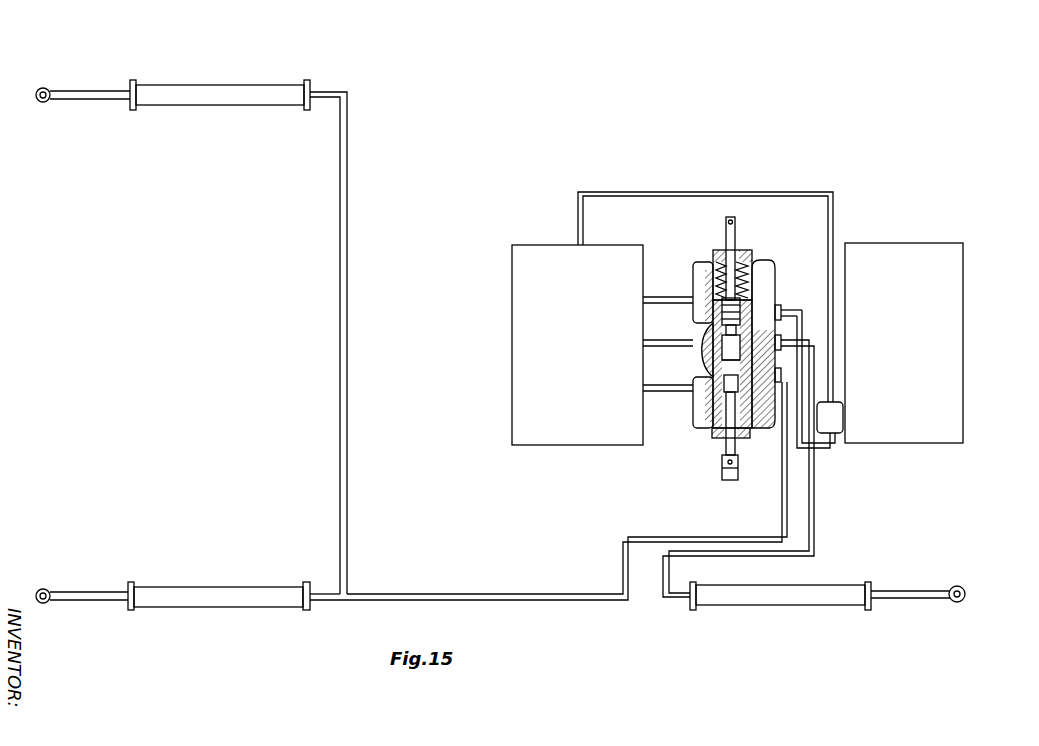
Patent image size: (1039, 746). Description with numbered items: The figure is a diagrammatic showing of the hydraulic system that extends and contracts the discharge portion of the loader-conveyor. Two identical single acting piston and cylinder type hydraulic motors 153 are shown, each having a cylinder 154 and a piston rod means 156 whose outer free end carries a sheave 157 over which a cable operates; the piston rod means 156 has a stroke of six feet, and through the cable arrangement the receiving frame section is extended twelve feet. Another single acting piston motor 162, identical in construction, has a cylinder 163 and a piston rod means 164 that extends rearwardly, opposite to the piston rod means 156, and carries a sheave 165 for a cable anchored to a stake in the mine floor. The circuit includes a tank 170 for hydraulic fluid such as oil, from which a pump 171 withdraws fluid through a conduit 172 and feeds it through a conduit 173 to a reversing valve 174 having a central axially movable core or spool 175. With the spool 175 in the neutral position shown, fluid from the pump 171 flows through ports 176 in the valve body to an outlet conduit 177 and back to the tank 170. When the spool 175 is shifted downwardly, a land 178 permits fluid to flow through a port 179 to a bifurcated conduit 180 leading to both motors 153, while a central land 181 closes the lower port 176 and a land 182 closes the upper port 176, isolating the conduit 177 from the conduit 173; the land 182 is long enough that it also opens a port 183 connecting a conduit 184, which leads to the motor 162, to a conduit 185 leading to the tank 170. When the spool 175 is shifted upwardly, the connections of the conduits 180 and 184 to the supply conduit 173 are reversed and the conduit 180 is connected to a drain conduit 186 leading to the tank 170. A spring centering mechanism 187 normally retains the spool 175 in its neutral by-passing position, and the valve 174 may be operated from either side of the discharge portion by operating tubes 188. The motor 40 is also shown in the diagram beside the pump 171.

The motor 40 is at (904, 343).
The single acting piston and cylinder type hydraulic motor 153 is at (199, 92).
The cylinder 154 is at (248, 92).
The piston rod means 156 is at (87, 90).
The sheave 157 is at (43, 104).
The single acting piston motor 162 is at (772, 596).
The cylinder 163 is at (812, 596).
The piston rod means 164 is at (912, 599).
The sheave 165 is at (963, 602).
The tank 170 is at (577, 345).
The pump 171 is at (838, 452).
The conduit 172 is at (835, 207).
The conduit 173 is at (797, 342).
The reversing valve 174 is at (769, 344).
The core or spool 175 is at (728, 222).
The ports 176 is at (707, 318).
The outlet conduit 177 is at (670, 340).
The land 178 is at (708, 393).
The port 179 is at (698, 388).
The conduit 180 is at (340, 268).
The central land 181 is at (797, 317).
The land 182 is at (735, 318).
The port 183 is at (710, 300).
The conduit 184 is at (792, 305).
The conduit 185 is at (670, 297).
The drain conduit 186 is at (668, 385).
The spring centering mechanism 187 is at (745, 283).
The operating tubes 188 is at (735, 233).